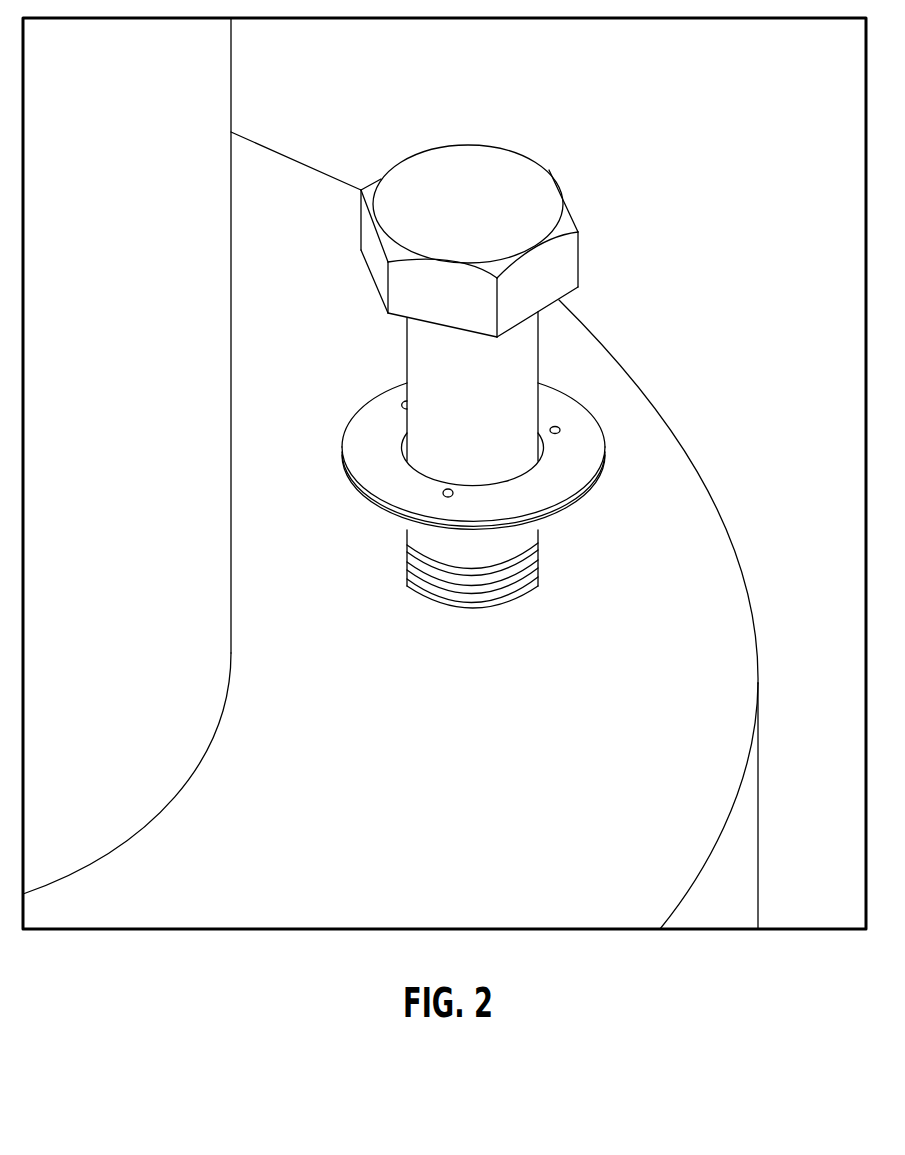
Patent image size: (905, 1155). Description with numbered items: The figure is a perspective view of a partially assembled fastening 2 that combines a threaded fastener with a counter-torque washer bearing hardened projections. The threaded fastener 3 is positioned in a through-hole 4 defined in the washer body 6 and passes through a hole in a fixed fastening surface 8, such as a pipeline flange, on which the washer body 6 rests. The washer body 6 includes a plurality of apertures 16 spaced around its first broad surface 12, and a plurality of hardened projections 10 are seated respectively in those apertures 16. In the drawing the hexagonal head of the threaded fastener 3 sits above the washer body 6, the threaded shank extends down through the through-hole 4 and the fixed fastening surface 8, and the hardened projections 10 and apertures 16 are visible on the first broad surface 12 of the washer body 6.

The fastening 2 is at (381, 146).
The threaded fastener 3 is at (480, 167).
The through-hole 4 is at (402, 443).
The washer body 6 is at (585, 452).
The fixed fastening surface 8 is at (484, 745).
The hardened projections 10 is at (405, 405).
The first broad surface 12 is at (576, 477).
The apertures 16 is at (448, 497).